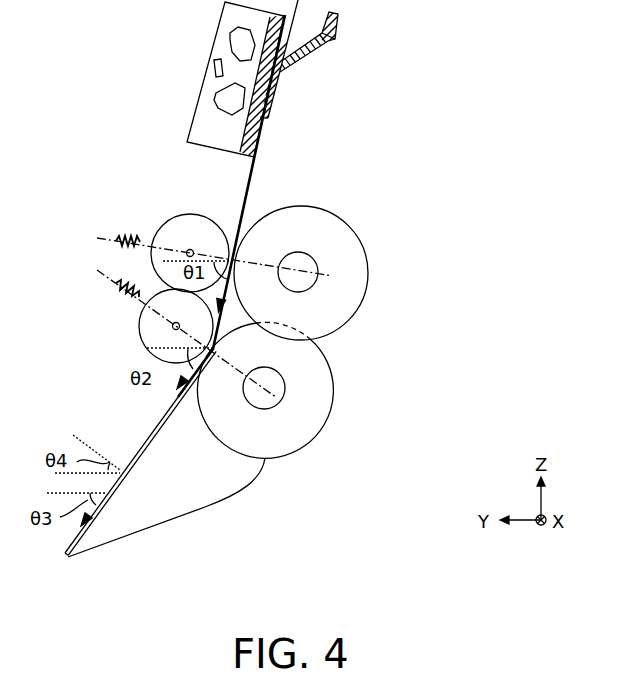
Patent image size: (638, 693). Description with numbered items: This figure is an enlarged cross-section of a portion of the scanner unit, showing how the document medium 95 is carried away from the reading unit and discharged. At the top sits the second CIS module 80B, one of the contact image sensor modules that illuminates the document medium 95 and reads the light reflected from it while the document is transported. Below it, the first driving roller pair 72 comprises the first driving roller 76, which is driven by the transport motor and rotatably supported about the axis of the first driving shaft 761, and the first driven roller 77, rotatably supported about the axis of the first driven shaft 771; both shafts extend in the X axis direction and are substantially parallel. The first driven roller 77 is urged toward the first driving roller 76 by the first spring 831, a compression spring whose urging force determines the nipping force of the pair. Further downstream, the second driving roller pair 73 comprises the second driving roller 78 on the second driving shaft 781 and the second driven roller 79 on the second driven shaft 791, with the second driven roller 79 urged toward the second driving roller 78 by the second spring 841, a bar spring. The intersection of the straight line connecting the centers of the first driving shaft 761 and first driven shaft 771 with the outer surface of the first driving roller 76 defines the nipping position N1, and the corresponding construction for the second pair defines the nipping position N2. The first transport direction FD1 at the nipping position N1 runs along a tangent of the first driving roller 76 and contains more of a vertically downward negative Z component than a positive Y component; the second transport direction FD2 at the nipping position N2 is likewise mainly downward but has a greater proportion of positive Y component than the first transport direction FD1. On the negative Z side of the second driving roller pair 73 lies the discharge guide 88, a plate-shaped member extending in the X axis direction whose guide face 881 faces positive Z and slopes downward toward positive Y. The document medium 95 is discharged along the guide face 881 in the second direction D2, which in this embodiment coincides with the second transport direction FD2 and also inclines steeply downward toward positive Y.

The second CIS module 80B is at (197, 107).
The document medium 95 is at (248, 177).
The first driven roller 77 is at (198, 222).
The first driven shaft 771 is at (185, 250).
The first spring 831 is at (116, 240).
The second driven roller 79 is at (140, 325).
The second driven shaft 791 is at (172, 330).
The second spring 841 is at (116, 289).
The first driving roller pair 72 is at (390, 293).
The first driving roller 76 is at (357, 253).
The first driving shaft 761 is at (307, 282).
The second driving roller pair 73 is at (357, 407).
The second driving roller 78 is at (313, 410).
The second driving shaft 781 is at (267, 410).
The discharge guide 88 is at (150, 522).
The guide face 881 is at (135, 455).
The nipping position of the first driving roller pair N1 is at (238, 259).
The nipping position of the second driving roller pair N2 is at (217, 353).
The first transport direction FD1 is at (235, 292).
The second transport direction FD2 is at (210, 378).
The second direction D2 is at (93, 510).